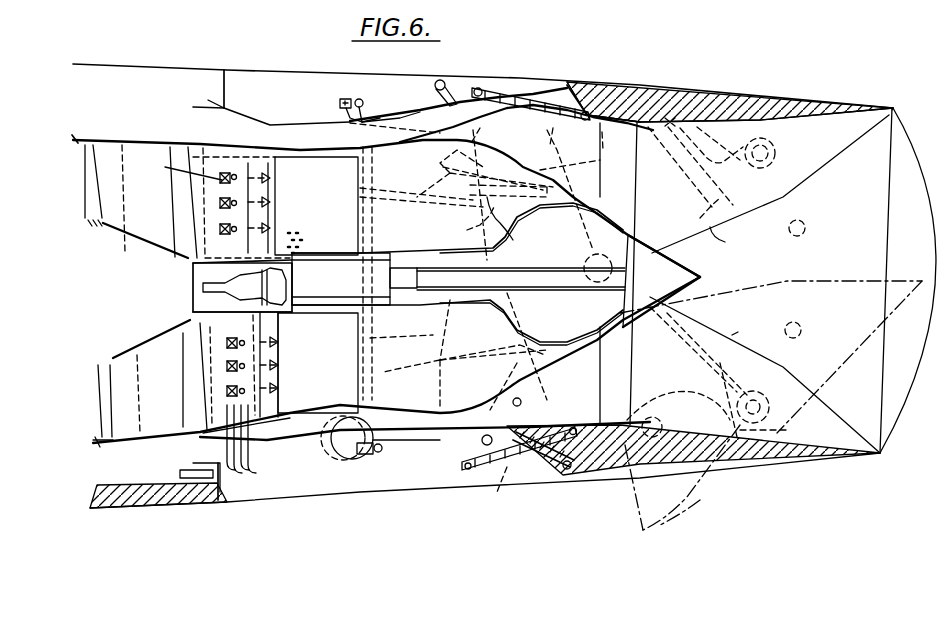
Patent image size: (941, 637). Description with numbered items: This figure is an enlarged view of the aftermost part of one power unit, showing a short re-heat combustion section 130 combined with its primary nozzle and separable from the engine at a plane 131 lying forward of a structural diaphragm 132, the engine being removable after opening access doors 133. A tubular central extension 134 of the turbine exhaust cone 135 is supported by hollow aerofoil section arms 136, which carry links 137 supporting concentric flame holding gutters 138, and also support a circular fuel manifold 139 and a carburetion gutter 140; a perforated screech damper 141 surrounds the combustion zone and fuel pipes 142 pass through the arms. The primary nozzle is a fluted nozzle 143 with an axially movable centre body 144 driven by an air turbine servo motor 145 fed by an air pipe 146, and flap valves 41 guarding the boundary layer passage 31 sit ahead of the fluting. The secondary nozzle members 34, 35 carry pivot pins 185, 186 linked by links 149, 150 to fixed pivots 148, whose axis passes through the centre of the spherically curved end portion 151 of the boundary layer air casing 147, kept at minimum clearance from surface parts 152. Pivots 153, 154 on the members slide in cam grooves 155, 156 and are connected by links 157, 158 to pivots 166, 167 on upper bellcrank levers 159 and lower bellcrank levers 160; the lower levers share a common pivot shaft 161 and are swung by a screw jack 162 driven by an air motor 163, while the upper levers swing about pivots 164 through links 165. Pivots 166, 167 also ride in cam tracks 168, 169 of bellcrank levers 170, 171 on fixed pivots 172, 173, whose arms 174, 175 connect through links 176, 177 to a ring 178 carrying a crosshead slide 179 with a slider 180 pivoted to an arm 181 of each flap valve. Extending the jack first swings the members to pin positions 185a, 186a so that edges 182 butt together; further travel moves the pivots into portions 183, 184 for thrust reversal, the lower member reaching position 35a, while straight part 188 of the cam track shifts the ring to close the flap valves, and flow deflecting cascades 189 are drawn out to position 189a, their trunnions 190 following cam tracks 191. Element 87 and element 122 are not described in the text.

The boundary layer passage 31 is at (415, 122).
The secondary nozzle adjustable member 34 is at (785, 107).
The secondary nozzle adjustable member 35 is at (693, 457).
The thrust reversal position of lower nozzle member 35a is at (706, 500).
The flap valve 41 is at (372, 124).
The nozzle wall 87 is at (570, 178).
The nacelle outer wall 122 is at (118, 168).
The re-heat combustion section 130 is at (289, 187).
The plane 131 is at (190, 158).
The structural diaphragm 132 is at (228, 90).
The access door 133 is at (113, 498).
The tubular central extension 134 is at (295, 312).
The turbine exhaust cone 135 is at (147, 240).
The hollow aerofoil section arm 136 is at (260, 187).
The link 137 is at (268, 177).
The flame holding gutter 138 is at (268, 177).
The circular fuel manifold 139 is at (230, 190).
The carburetion gutter 140 is at (175, 163).
The perforated screech damper 141 is at (268, 189).
The fuel pipe 142 is at (258, 438).
The fluted nozzle 143 is at (598, 160).
The centre body 144 is at (617, 212).
The air turbine servo motor 145 is at (288, 282).
The air pipe 146 is at (236, 473).
The boundary layer air casing 147 is at (206, 94).
The fixed pivot 148 is at (598, 262).
The link 149 is at (717, 213).
The link 150 is at (733, 373).
The spherically curved end portion 151 is at (643, 130).
The surface part 152 is at (685, 104).
The pivot 153 is at (738, 106).
The pivot 154 is at (678, 402).
The cam groove 155 is at (711, 141).
The cam groove 156 is at (681, 421).
The link 157 is at (386, 191).
The link 158 is at (396, 360).
The upper bellcrank lever 159 is at (477, 85).
The lower bellcrank lever 160 is at (406, 445).
The common pivot shaft 161 is at (481, 441).
The screw jack 162 is at (378, 451).
The air motor 163 is at (353, 457).
The pivot 164 is at (520, 87).
The link 165 is at (470, 230).
The pivot 166 is at (450, 174).
The pivot 167 is at (438, 362).
The cam track 168 is at (508, 181).
The cam track 169 is at (538, 333).
The bellcrank lever 170 is at (506, 218).
The bellcrank lever 171 is at (447, 365).
The fixed pivot 172 is at (408, 233).
The fixed pivot 173 is at (488, 318).
The arm 174 is at (521, 246).
The arm 175 is at (457, 318).
The link 176 is at (421, 210).
The link 177 is at (401, 321).
The ring 178 is at (385, 273).
The crosshead slide 179 is at (372, 99).
The slider 180 is at (354, 99).
The arm 181 is at (330, 109).
The edge 182 is at (740, 286).
The cam track portion 183 is at (745, 132).
The cam track portion 184 is at (782, 433).
The pivot pin 185 is at (769, 155).
The pin position 185a is at (803, 234).
The pivot pin 186 is at (766, 402).
The pin position 186a is at (803, 330).
The straight part of cam track 188 is at (548, 345).
The flow deflecting cascade 189 is at (570, 88).
The extended cascade position 189a is at (572, 468).
The trunnion 190 is at (457, 467).
The cam track 191 is at (493, 491).